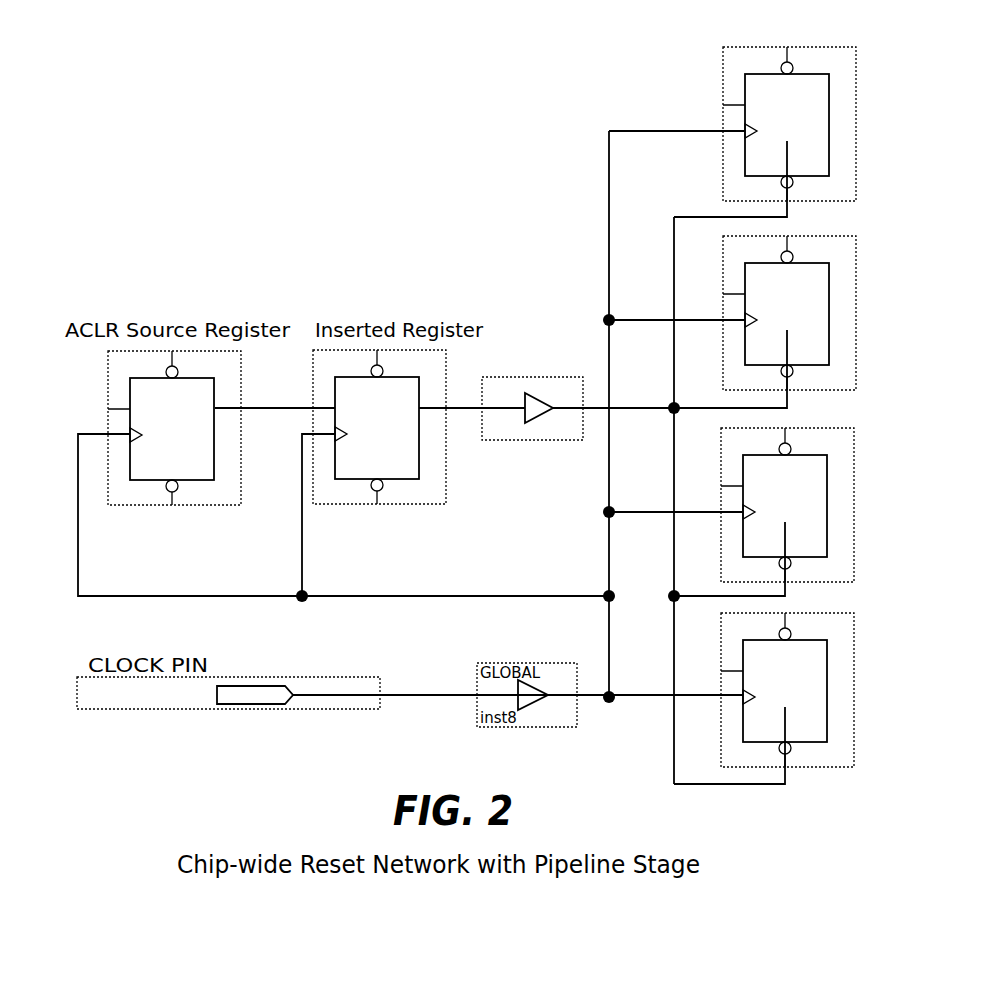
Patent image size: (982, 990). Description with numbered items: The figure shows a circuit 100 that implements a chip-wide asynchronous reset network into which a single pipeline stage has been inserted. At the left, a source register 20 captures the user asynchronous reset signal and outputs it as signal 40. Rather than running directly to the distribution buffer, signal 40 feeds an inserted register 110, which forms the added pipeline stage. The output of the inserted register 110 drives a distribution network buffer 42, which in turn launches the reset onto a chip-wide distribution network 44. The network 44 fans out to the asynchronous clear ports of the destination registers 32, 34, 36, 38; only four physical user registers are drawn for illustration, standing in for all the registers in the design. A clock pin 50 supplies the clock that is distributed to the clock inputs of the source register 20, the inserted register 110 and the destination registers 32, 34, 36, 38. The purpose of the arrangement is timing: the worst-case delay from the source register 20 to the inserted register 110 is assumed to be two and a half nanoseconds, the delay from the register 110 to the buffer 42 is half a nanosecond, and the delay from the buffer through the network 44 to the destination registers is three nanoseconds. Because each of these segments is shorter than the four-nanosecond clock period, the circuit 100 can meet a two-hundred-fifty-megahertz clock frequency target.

The circuit 100 is at (155, 260).
The source register 20 is at (160, 440).
The inserted register 110 is at (360, 439).
The signal 40 is at (278, 409).
The distribution network buffer 42 is at (542, 440).
The chip-wide distribution network 44 is at (638, 410).
The clock pin 50 is at (255, 704).
The destination register 32 is at (775, 136).
The destination register 34 is at (775, 325).
The destination register 36 is at (773, 517).
The destination register 38 is at (773, 702).